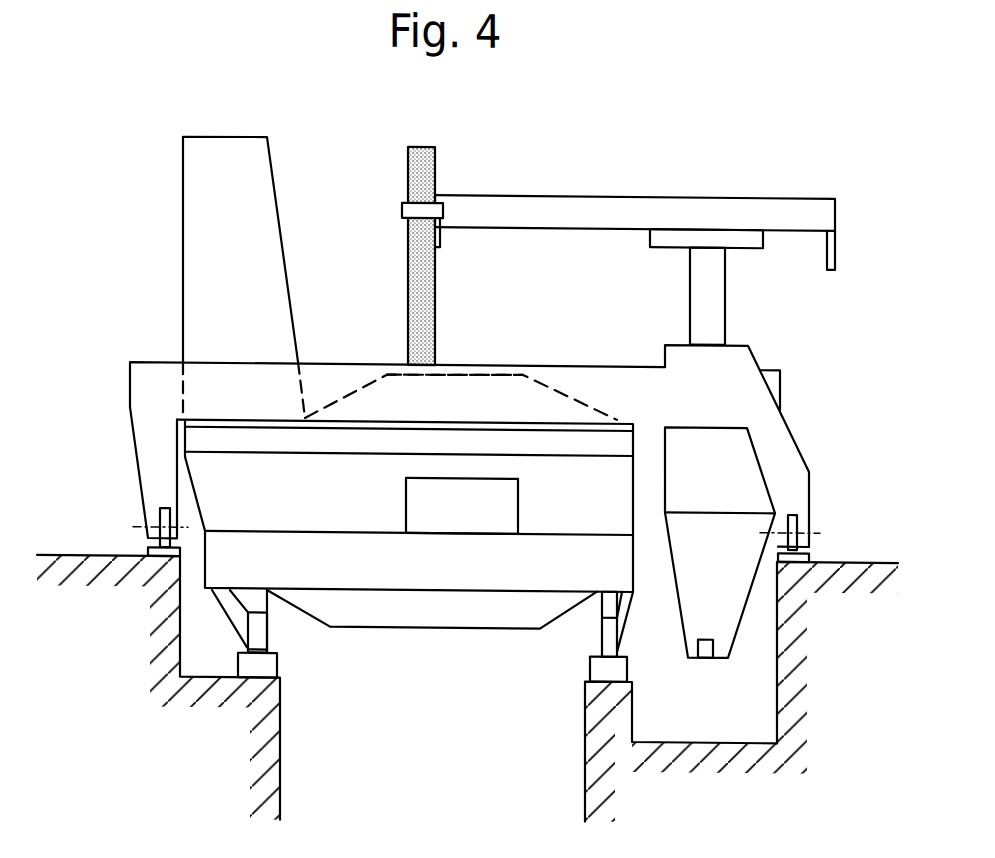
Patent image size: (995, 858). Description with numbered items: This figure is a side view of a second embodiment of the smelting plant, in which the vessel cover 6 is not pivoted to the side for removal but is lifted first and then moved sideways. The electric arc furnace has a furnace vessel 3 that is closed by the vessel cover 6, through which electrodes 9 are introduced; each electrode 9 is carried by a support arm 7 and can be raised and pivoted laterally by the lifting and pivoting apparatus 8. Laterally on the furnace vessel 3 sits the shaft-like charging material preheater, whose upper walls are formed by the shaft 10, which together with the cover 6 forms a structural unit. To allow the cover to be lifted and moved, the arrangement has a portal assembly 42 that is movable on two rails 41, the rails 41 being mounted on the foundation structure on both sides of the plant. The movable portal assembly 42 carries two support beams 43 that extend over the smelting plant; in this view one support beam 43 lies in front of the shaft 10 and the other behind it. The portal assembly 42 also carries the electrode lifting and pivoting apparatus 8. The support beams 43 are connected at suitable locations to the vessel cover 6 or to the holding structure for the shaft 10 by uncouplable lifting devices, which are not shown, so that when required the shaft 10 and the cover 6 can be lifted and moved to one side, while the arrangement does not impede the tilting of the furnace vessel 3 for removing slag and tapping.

The furnace vessel 3 is at (195, 466).
The vessel cover 6 is at (505, 371).
The support arm 7 is at (613, 204).
The lifting and pivoting apparatus 8 is at (752, 485).
The electrode 9 is at (432, 176).
The shaft 10 is at (262, 214).
The rail 41 is at (148, 545).
The portal assembly 42 is at (801, 422).
The support beam 43 is at (348, 375).